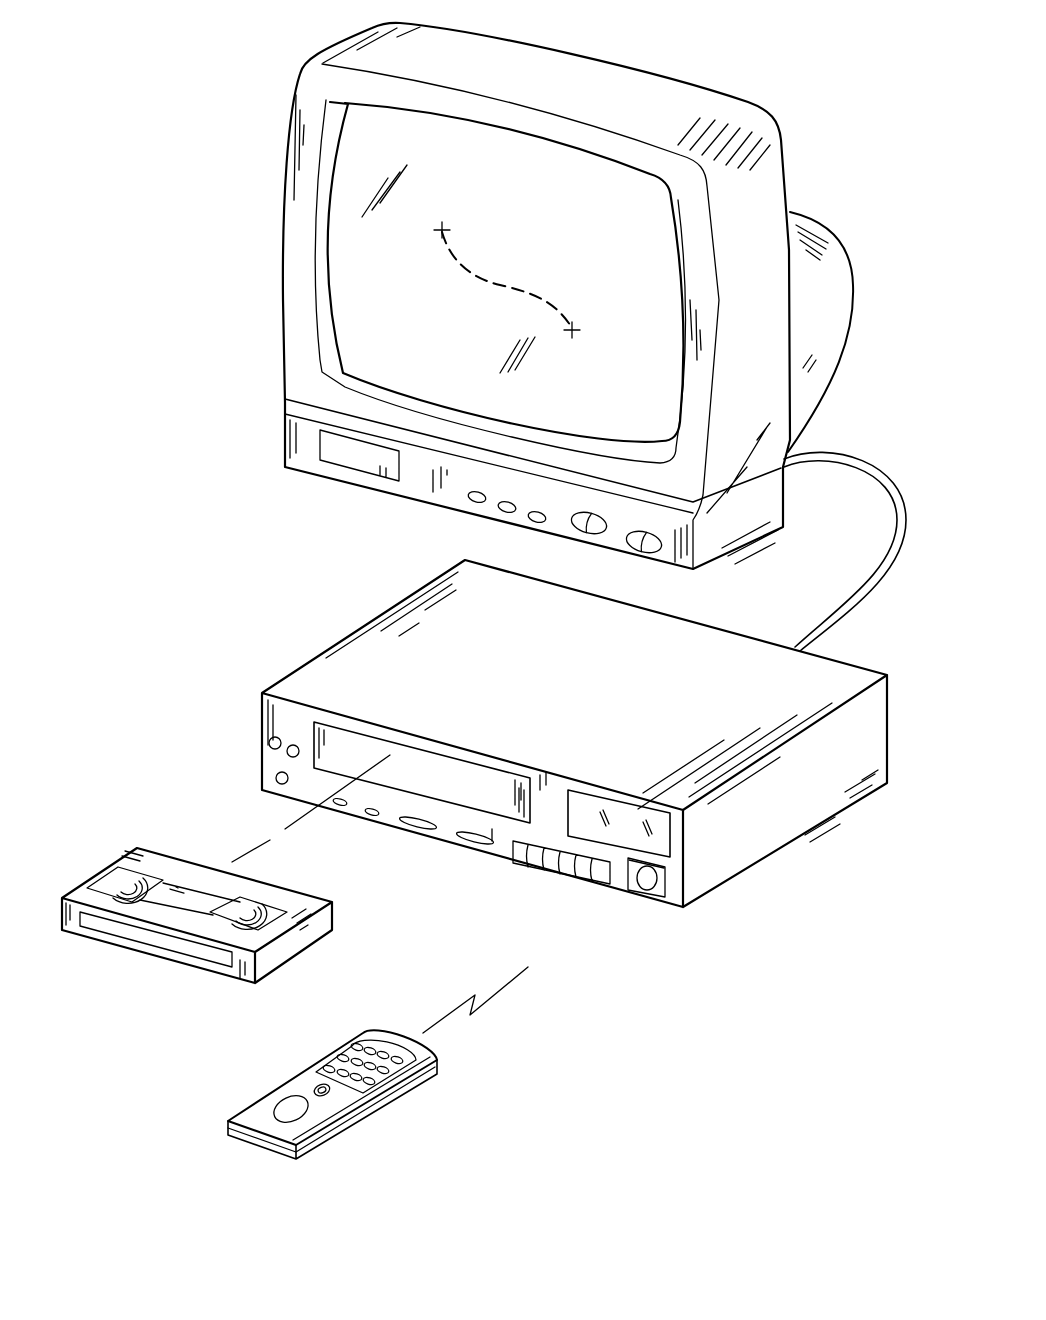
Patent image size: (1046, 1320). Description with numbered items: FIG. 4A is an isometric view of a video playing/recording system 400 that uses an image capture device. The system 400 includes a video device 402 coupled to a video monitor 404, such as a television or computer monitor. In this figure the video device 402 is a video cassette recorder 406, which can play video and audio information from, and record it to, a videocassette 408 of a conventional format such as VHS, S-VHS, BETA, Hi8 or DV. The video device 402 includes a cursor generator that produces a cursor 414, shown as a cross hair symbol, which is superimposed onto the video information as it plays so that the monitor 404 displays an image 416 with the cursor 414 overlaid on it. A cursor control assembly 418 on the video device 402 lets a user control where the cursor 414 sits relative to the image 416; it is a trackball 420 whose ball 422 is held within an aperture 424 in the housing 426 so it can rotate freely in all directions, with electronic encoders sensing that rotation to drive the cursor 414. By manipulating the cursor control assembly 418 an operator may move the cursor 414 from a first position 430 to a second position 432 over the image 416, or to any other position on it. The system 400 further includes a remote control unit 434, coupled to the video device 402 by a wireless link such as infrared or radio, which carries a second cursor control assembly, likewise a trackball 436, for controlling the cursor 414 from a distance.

The system 400 is at (238, 70).
The video device 402 is at (337, 657).
The video monitor 404 is at (290, 273).
The video cassette recorder 406 is at (430, 615).
The videocassette 408 is at (145, 863).
The cursor 414 is at (572, 332).
The image 416 is at (557, 212).
The cursor control assembly 418 is at (628, 893).
The trackball 420 is at (650, 889).
The ball 422 is at (668, 905).
The aperture 424 is at (687, 886).
The housing 426 is at (682, 837).
The first position 430 is at (575, 326).
The second position 432 is at (437, 234).
The remote control unit 434 is at (430, 1077).
The trackball 436 is at (280, 1108).